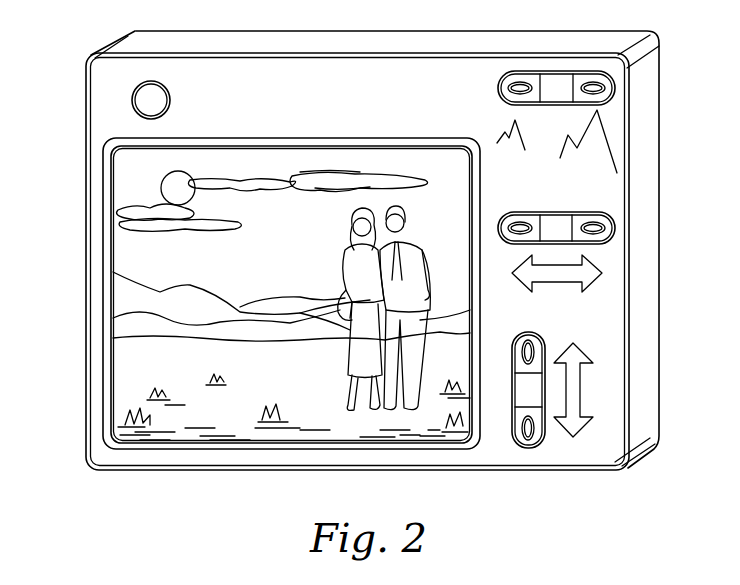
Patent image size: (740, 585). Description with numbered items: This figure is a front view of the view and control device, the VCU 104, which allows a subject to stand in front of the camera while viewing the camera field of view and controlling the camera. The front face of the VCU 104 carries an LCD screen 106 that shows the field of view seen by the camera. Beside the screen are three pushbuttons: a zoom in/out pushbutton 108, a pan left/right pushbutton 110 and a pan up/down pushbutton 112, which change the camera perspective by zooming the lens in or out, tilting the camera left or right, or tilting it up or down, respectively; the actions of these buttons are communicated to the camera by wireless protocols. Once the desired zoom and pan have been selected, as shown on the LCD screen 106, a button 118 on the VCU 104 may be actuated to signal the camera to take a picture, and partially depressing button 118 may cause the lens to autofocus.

The VCU 104 is at (341, 101).
The LCD screen 106 is at (138, 262).
The zoom in/out pushbutton 108 is at (558, 72).
The pan left/right pushbutton 110 is at (606, 212).
The pan up/down pushbutton 112 is at (540, 425).
The button 118 is at (155, 93).